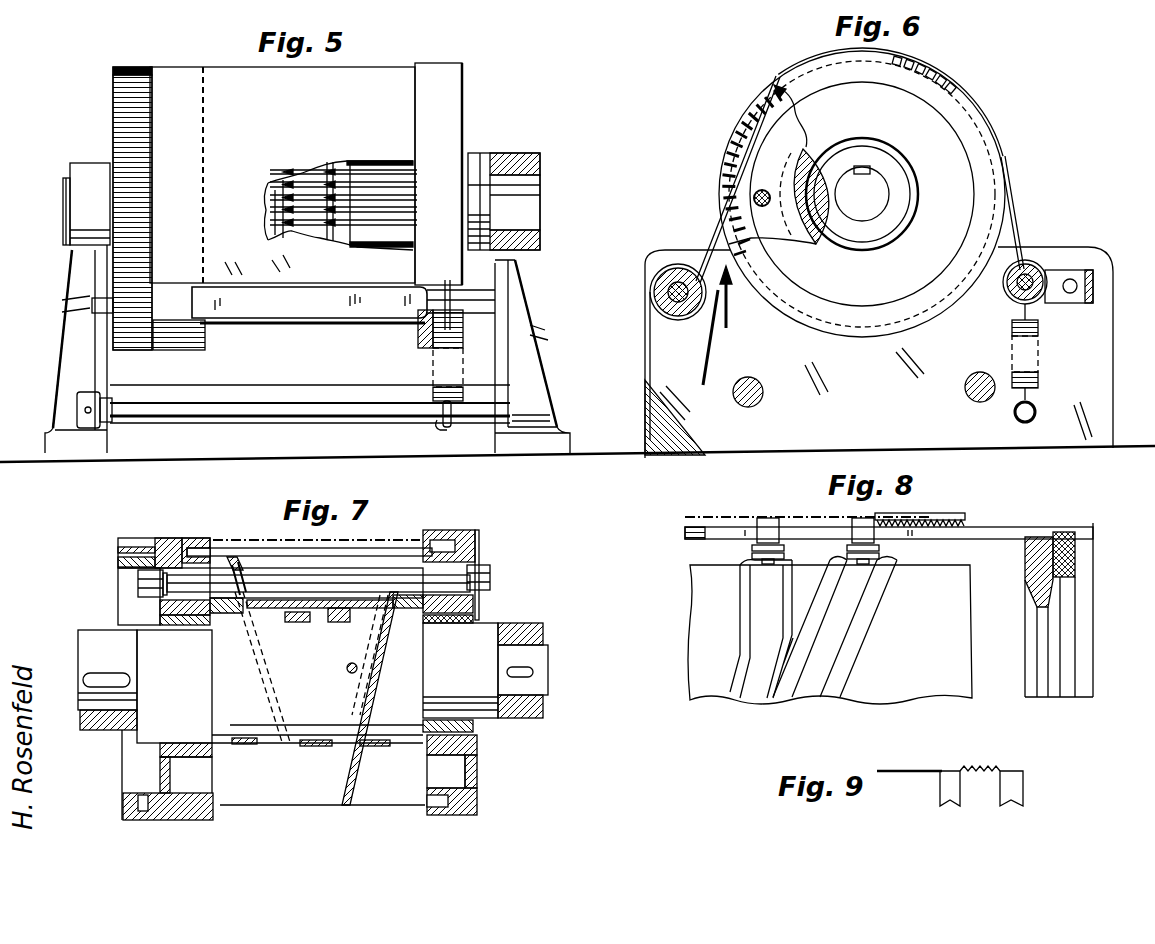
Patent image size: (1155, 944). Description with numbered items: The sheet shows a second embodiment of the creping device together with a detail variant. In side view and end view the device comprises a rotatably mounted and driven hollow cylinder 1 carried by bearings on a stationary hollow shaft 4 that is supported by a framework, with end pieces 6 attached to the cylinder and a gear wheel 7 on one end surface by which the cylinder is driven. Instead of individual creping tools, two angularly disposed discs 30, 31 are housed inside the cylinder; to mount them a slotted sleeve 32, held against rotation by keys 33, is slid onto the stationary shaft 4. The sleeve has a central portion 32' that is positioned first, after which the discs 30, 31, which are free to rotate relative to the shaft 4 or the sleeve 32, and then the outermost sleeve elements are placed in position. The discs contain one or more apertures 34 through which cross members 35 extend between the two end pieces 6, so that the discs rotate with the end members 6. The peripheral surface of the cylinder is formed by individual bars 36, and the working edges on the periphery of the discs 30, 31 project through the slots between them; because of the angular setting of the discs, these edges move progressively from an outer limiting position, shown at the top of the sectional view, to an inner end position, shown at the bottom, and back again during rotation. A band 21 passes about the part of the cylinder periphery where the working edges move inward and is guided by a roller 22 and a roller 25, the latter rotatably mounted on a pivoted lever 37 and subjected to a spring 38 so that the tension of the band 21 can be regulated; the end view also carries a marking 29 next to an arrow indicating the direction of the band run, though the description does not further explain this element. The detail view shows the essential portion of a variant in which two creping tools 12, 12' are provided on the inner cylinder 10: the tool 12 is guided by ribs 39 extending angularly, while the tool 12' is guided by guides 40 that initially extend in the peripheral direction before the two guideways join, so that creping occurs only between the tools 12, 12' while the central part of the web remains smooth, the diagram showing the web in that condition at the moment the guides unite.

In FIG. 6, the hollow cylinder 1 is at (780, 90).
In FIG. 5, the stationary hollow shaft 4 is at (478, 162).
In FIG. 6, the stationary hollow shaft 4 is at (877, 187).
In FIG. 7, the stationary hollow shaft 4 is at (482, 635).
In FIG. 5, the end pieces 6 is at (433, 72).
In FIG. 7, the end pieces 6 is at (175, 537).
In FIG. 8, the end pieces 6 is at (1035, 563).
In FIG. 8, the gear wheel 7 is at (1065, 538).
In FIG. 8, the inner cylinder 10 is at (966, 657).
In FIG. 8, the creping tool 12 is at (907, 521).
In FIG. 9, the creping tool 12 is at (1016, 769).
In FIG. 8, the creping tool 12' is at (768, 521).
In FIG. 9, the creping tool 12' is at (970, 768).
In FIG. 5, the band 21 is at (375, 73).
In FIG. 6, the band 21 is at (717, 230).
In FIG. 7, the band 21 is at (380, 540).
In FIG. 8, the band 21 is at (693, 520).
In FIG. 6, the guide roller 22 is at (656, 315).
In FIG. 6, the roller 25 is at (1010, 295).
In FIG. 6, the bar 29 is at (713, 350).
In FIG. 8, the bar 29 is at (965, 527).
In FIG. 9, the bar 29 is at (901, 770).
In FIG. 5, the disc 30 is at (342, 228).
In FIG. 6, the disc 30 is at (775, 168).
In FIG. 7, the disc 30 is at (338, 800).
In FIG. 5, the disc 31 is at (272, 218).
In FIG. 7, the disc 31 is at (238, 565).
In FIG. 7, the slotted sleeve 32 is at (362, 698).
In FIG. 7, the central portion 32' is at (282, 688).
In FIG. 7, the keys 33 is at (297, 624).
In FIG. 6, the apertures 34 is at (756, 194).
In FIG. 7, the apertures 34 is at (240, 560).
In FIG. 6, the cross members 35 is at (755, 234).
In FIG. 7, the cross members 35 is at (480, 548).
In FIG. 5, the bars 36 is at (370, 172).
In FIG. 6, the bars 36 is at (738, 136).
In FIG. 7, the bars 36 is at (440, 545).
In FIG. 6, the pivoted lever 37 is at (1063, 273).
In FIG. 6, the spring 38 is at (1042, 372).
In FIG. 8, the ribs 39 is at (812, 612).
In FIG. 8, the guides 40 is at (788, 595).